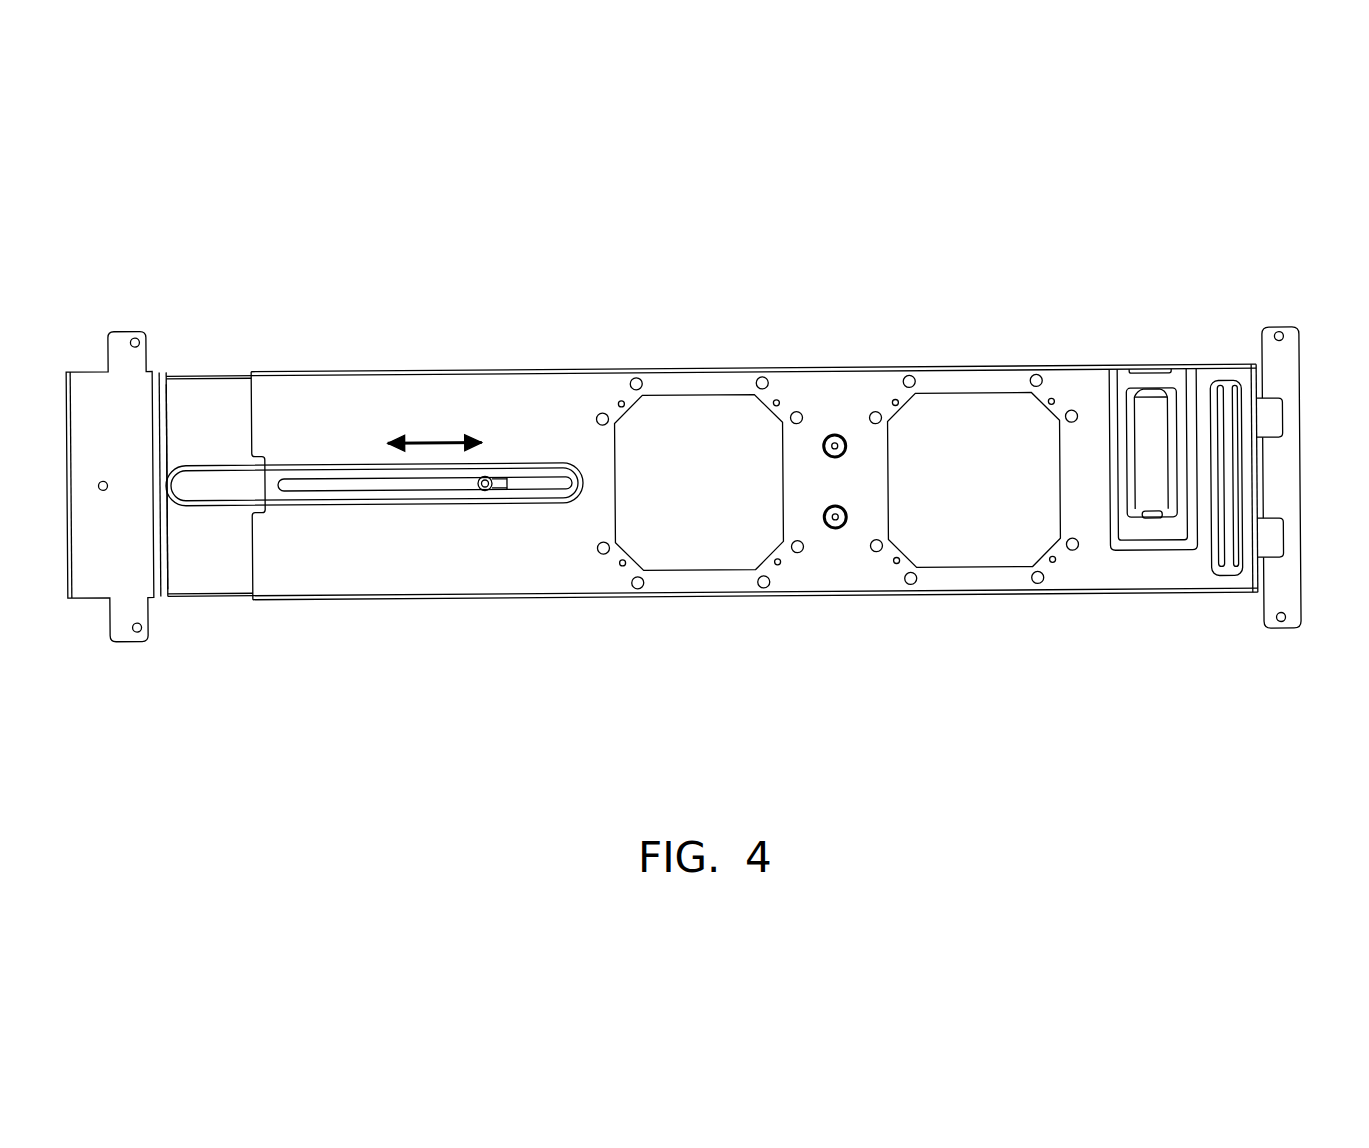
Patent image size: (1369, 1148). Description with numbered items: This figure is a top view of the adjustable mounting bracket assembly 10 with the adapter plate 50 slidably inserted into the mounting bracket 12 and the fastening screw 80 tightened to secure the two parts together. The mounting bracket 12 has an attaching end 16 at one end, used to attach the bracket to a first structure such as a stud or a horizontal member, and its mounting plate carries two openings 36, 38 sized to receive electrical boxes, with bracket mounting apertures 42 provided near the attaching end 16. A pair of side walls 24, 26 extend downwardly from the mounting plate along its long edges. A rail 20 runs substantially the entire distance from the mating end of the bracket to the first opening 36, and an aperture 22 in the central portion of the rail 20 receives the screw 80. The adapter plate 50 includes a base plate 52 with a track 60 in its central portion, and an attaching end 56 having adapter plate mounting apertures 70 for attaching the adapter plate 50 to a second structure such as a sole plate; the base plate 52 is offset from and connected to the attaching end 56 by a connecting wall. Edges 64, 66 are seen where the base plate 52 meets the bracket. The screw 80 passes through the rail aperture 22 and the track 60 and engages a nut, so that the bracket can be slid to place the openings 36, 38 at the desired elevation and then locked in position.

The adjustable mounting bracket assembly 10 is at (950, 297).
The mounting bracket 12 is at (1012, 634).
The attaching end 16 is at (1302, 533).
The rail 20 is at (277, 472).
The aperture 22 is at (398, 490).
The side wall 24 is at (516, 368).
The side wall 26 is at (553, 596).
The opening 36 is at (675, 506).
The opening 38 is at (955, 506).
The bracket mounting aperture 42 is at (1280, 335).
The adapter plate 50 is at (219, 636).
The base plate 52 is at (200, 398).
The attaching end 56 is at (92, 367).
The track 60 is at (193, 488).
The upper edge 64 is at (237, 372).
The lower edge 66 is at (241, 599).
The adapter plate mounting aperture 70 is at (140, 633).
The screw 80 is at (490, 480).